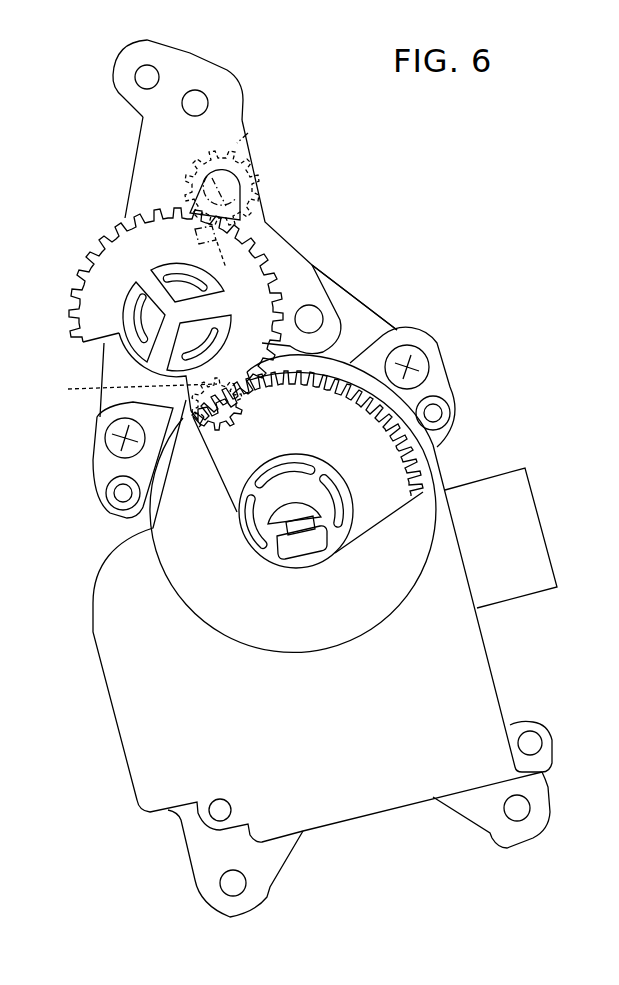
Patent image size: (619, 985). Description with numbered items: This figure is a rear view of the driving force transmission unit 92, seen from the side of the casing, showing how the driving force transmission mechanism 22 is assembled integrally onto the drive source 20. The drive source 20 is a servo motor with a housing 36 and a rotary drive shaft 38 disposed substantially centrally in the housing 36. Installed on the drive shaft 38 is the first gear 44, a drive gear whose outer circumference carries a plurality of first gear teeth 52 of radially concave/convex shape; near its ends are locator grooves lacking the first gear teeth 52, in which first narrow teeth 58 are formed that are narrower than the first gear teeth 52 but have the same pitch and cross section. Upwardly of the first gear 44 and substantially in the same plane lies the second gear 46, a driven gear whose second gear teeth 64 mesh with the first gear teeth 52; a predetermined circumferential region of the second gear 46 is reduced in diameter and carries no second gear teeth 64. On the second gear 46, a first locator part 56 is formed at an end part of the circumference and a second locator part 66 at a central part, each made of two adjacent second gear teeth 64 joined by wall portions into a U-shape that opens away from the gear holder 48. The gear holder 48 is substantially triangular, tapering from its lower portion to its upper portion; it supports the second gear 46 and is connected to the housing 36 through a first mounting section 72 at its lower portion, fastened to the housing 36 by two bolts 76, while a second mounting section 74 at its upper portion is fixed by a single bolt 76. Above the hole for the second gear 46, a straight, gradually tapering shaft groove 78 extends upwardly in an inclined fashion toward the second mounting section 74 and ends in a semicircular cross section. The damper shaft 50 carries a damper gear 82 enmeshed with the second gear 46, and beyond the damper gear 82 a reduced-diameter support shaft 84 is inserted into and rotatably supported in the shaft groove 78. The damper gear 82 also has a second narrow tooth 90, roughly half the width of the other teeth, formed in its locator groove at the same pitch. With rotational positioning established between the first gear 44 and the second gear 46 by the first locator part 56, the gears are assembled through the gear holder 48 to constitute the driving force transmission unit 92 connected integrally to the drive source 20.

The drive source 20 is at (120, 807).
The driving force transmission mechanism 22 is at (357, 260).
The housing 36 is at (125, 665).
The drive shaft 38 is at (293, 507).
The first gear 44 is at (383, 516).
The second gear 46 is at (81, 292).
The gear holder 48 is at (107, 204).
The damper shaft 50 is at (200, 160).
The first gear teeth 52 is at (432, 458).
The first locator part 56 is at (128, 390).
The first narrow teeth 58 is at (227, 406).
The second gear teeth 64 is at (78, 343).
The second locator part 66 is at (235, 267).
The first mounting section 72 is at (418, 340).
The second mounting section 74 is at (187, 63).
The bolts 76 is at (108, 440).
The shaft groove 78 is at (200, 181).
The damper gear 82 is at (248, 133).
The support shaft 84 is at (258, 178).
The second narrow tooth 90 is at (193, 240).
The driving force transmission unit 92 is at (520, 683).